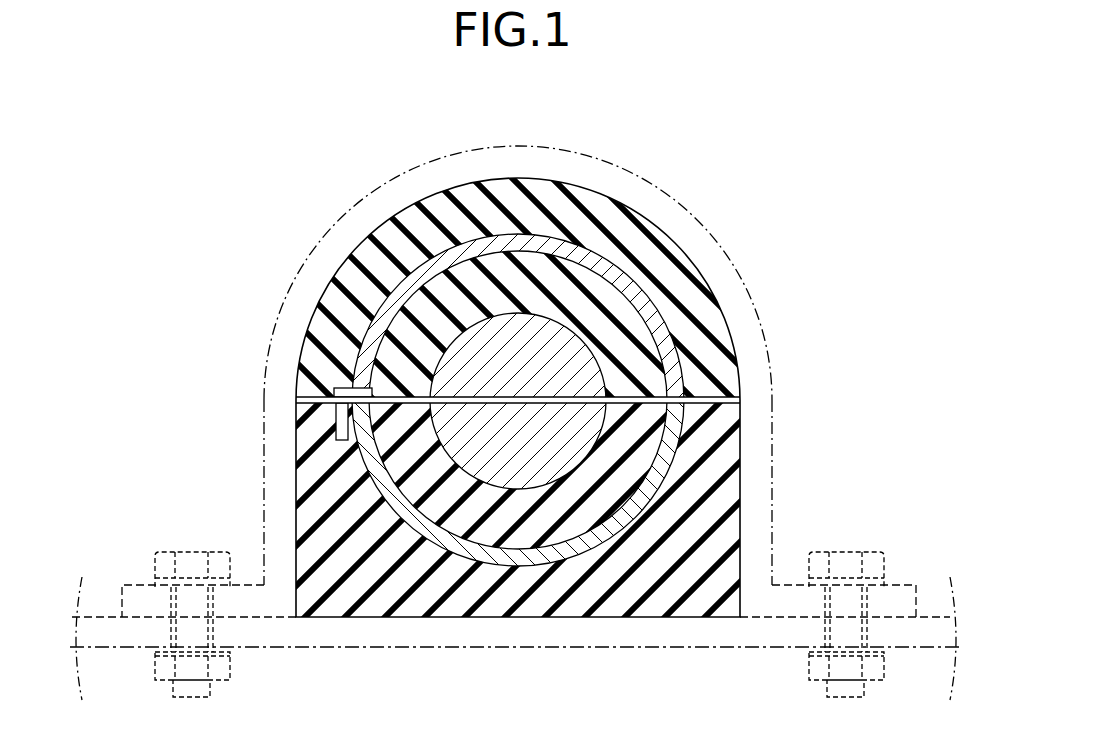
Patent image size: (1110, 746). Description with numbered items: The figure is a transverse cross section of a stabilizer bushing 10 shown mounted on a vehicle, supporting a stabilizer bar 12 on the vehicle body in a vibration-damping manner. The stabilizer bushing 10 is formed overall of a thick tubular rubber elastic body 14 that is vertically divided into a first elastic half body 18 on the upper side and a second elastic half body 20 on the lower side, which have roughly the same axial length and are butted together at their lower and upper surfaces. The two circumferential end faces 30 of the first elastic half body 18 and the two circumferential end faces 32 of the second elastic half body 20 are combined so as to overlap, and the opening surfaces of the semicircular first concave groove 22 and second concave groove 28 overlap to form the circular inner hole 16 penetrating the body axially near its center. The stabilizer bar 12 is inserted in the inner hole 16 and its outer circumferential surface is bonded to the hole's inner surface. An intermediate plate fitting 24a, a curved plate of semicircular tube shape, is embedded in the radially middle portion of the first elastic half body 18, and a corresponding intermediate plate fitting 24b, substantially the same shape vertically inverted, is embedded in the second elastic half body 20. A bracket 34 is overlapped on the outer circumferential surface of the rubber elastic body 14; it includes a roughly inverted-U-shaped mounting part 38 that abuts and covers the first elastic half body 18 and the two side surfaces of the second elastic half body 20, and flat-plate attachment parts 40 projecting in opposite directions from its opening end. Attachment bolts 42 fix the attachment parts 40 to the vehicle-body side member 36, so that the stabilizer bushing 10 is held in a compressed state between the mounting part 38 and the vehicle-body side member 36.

The stabilizer bushing 10 is at (521, 402).
The stabilizer bar 12 is at (512, 455).
The rubber elastic body 14 is at (212, 352).
The inner hole 16 is at (524, 402).
The first elastic half body 18 is at (327, 378).
The second elastic half body 20 is at (320, 438).
The first concave groove 22 is at (590, 378).
The intermediate plate fitting 24a is at (527, 240).
The intermediate plate fitting 24b is at (572, 556).
The second concave groove 28 is at (588, 430).
The circumferential end face 30 is at (342, 406).
The circumferential end face 32 is at (375, 386).
The bracket 34 is at (357, 197).
The vehicle-body side member 36 is at (773, 645).
The mounting part 38 is at (617, 185).
The attachment part 40 is at (140, 600).
The attachment bolt 42 is at (190, 600).